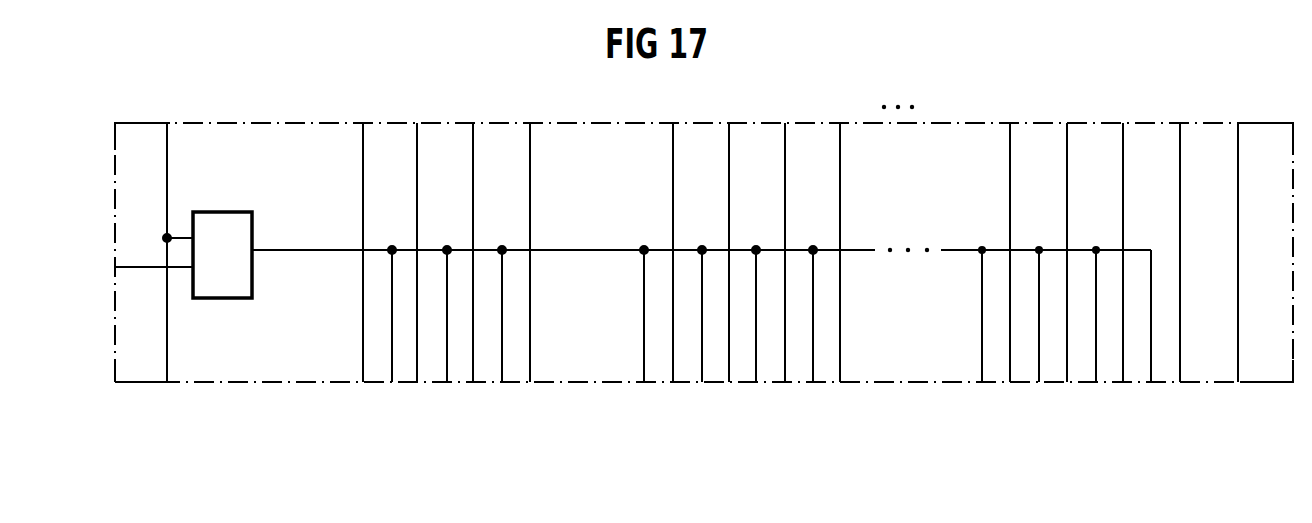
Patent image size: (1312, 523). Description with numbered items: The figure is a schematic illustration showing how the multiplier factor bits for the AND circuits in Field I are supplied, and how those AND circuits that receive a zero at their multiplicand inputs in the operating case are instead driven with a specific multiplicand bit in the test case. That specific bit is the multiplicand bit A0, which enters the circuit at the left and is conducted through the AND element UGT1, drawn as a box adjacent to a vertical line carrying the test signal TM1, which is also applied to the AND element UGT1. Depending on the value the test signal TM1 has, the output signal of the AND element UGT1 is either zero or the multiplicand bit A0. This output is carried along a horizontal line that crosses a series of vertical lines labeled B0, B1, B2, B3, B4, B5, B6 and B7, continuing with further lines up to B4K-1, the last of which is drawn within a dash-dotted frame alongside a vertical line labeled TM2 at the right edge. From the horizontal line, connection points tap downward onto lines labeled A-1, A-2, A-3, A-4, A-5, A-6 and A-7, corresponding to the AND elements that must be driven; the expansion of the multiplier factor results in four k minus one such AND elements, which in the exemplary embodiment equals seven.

The test signal TM1 is at (177, 229).
The second terminating module TM2 is at (1249, 227).
The AND element UGT1 is at (222, 298).
The multiplicand bit A0 is at (135, 262).
The bit line B0 is at (364, 229).
The bit line B1 is at (420, 229).
The bit line B2 is at (478, 229).
The bit line B3 is at (532, 229).
The bit line B4 is at (680, 229).
The bit line B5 is at (732, 229).
The bit line B6 is at (785, 229).
The bit line B7 is at (842, 229).
The bit line B4K-1 is at (1149, 229).
The output line A-1 is at (390, 341).
The output line A-2 is at (450, 341).
The output line A-3 is at (505, 341).
The output line A-4 is at (642, 341).
The output line A-5 is at (710, 341).
The output line A-6 is at (768, 341).
The output line A-7 is at (826, 341).